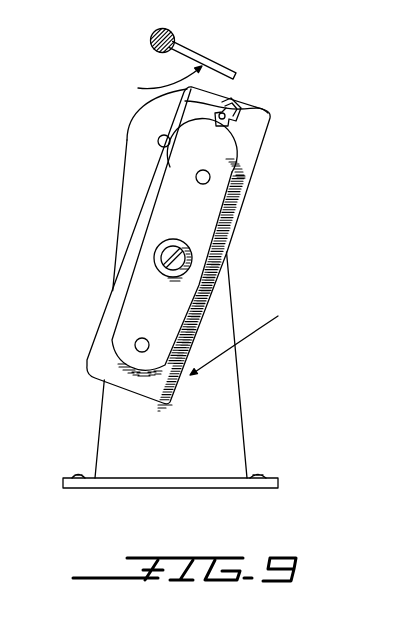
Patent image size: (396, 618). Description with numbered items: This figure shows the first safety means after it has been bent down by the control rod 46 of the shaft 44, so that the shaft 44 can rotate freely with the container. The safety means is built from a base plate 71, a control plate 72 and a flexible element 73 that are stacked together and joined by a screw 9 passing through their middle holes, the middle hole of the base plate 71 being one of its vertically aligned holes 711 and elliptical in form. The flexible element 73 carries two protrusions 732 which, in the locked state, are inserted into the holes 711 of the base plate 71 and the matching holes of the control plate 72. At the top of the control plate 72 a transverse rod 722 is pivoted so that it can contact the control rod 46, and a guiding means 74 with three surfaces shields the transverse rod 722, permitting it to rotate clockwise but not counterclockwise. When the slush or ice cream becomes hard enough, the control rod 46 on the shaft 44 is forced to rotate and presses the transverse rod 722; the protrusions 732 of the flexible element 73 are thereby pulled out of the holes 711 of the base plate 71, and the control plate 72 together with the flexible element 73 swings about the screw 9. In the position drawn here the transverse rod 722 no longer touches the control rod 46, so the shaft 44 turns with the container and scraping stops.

The screw 9 is at (157, 260).
The shaft 44 is at (168, 29).
The control rod 46 is at (209, 61).
The base plate 71 is at (235, 420).
The control plate 72 is at (96, 361).
The flexible element 73 is at (216, 202).
The guiding means 74 is at (270, 112).
The holes 711 is at (158, 141).
The transverse rod 722 is at (185, 102).
The protrusions 732 is at (211, 178).